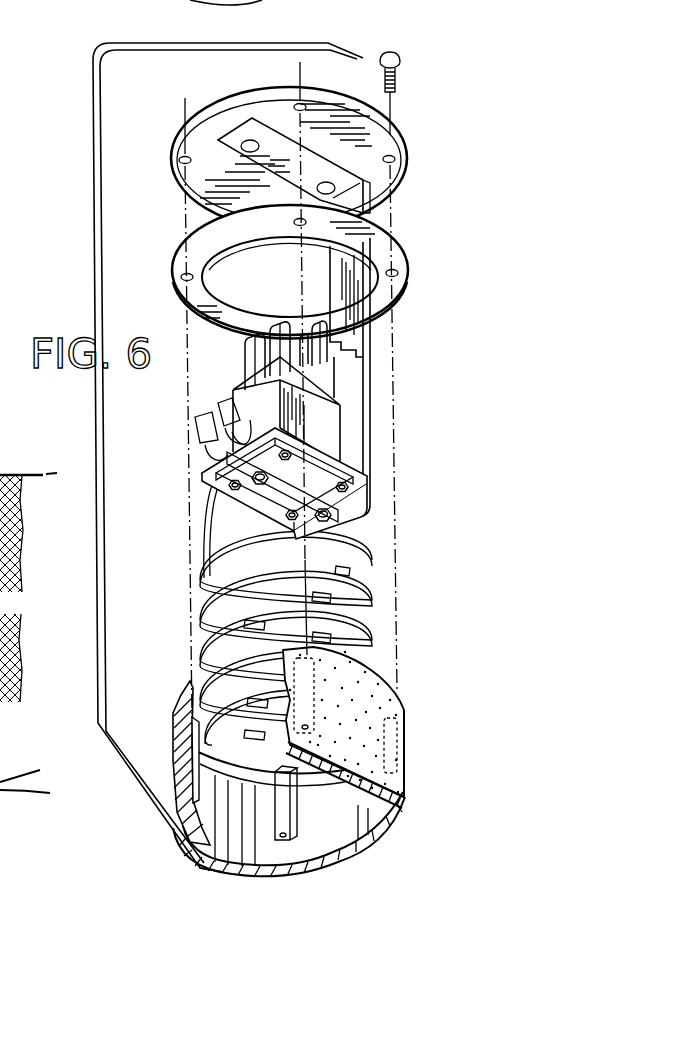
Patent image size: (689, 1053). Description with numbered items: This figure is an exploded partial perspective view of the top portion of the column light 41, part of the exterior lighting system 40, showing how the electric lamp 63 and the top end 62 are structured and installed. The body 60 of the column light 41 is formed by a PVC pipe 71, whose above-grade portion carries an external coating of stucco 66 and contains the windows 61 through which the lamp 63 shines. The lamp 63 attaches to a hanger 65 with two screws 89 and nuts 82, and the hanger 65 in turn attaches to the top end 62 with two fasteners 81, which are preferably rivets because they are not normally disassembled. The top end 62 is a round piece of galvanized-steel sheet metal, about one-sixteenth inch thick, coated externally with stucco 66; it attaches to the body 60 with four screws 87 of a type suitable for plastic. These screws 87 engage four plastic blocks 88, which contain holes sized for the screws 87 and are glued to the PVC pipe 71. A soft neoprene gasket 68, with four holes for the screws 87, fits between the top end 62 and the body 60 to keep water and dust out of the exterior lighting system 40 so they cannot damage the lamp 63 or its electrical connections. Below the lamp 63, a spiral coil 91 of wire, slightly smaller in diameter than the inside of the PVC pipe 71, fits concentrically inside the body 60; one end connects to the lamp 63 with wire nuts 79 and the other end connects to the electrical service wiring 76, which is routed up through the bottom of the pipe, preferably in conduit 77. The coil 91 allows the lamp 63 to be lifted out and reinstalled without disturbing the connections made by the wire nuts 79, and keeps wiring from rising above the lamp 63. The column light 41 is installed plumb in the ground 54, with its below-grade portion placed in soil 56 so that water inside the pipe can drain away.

The exterior lighting system 40 is at (76, 108).
The column light 41 is at (118, 38).
The ground 54 is at (58, 470).
The soil 56 is at (32, 473).
The body 60 is at (174, 688).
The windows 61 is at (279, 0).
The top end 62 is at (176, 143).
The lamp 63 is at (338, 433).
The hanger 65 is at (355, 418).
The stucco 66 is at (237, 90).
The gasket 68 is at (178, 266).
The PVC pipe 71 is at (182, 838).
The electrical service wiring 76 is at (43, 794).
The conduit 77 is at (0, 750).
The wire nuts 79 is at (197, 422).
The fasteners 81 is at (240, 152).
The nuts 82 is at (345, 522).
The screws 87 is at (400, 60).
The blocks 88 is at (172, 761).
The screws 89 is at (300, 520).
The coil 91 is at (212, 568).